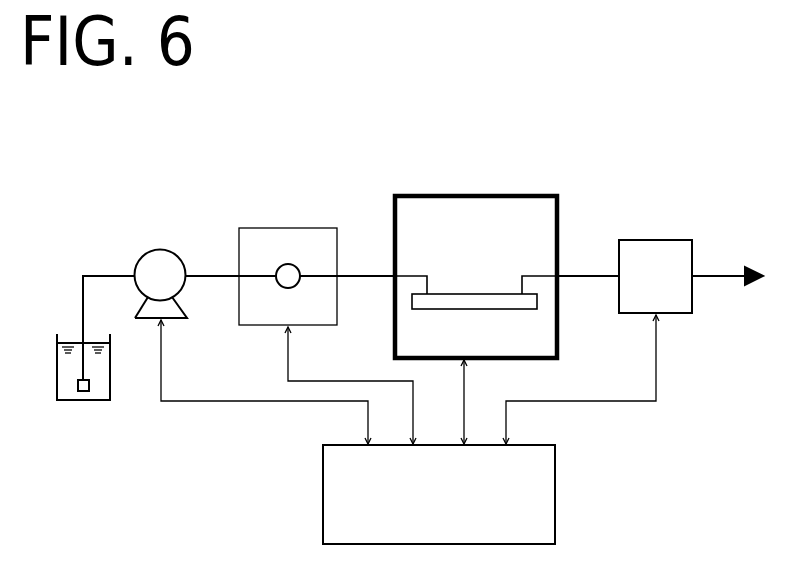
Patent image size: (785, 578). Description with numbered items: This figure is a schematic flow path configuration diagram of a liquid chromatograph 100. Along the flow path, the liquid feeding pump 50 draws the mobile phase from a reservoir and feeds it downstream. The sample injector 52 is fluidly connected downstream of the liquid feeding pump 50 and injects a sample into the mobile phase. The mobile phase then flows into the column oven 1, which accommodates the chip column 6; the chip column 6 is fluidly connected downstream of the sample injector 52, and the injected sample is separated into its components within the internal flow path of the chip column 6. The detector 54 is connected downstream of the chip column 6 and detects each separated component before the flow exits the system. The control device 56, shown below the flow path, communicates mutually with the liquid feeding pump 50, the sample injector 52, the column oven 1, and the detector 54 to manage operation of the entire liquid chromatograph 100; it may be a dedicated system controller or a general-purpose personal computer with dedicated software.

The liquid chromatograph 100 is at (669, 117).
The liquid feeding pump 50 is at (172, 249).
The sample injector 52 is at (315, 225).
The column oven 1 is at (523, 193).
The chip column 6 is at (475, 293).
The detector 54 is at (670, 239).
The control device 56 is at (557, 470).